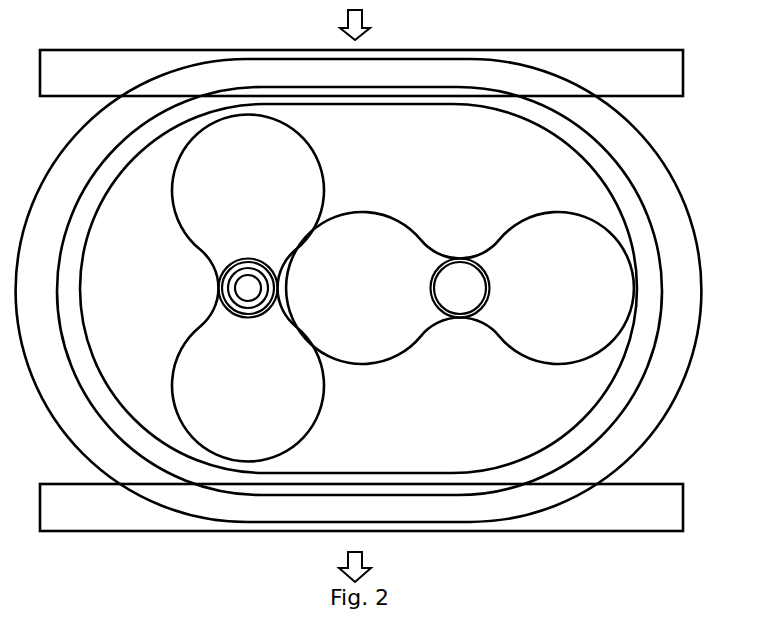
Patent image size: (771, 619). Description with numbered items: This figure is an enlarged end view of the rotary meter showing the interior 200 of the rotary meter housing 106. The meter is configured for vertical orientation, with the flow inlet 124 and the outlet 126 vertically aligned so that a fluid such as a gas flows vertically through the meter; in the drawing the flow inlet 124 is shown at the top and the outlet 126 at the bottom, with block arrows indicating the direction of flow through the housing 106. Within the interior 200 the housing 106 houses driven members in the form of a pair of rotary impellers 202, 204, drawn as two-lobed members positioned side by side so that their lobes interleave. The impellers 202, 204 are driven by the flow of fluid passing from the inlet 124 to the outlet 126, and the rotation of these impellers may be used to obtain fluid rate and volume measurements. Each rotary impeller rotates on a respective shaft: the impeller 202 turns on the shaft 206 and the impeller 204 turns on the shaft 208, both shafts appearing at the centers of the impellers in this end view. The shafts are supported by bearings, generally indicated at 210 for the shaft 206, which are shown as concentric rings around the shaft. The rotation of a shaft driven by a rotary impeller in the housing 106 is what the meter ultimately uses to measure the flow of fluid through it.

The rotary meter housing 106 is at (80, 128).
The flow inlet 124 is at (342, 48).
The outlet 126 is at (336, 531).
The interior 200 is at (437, 176).
The rotary impeller 202 is at (273, 204).
The rotary impeller 204 is at (567, 301).
The shaft 206 is at (225, 275).
The shaft 208 is at (440, 278).
The bearings 210 is at (243, 250).